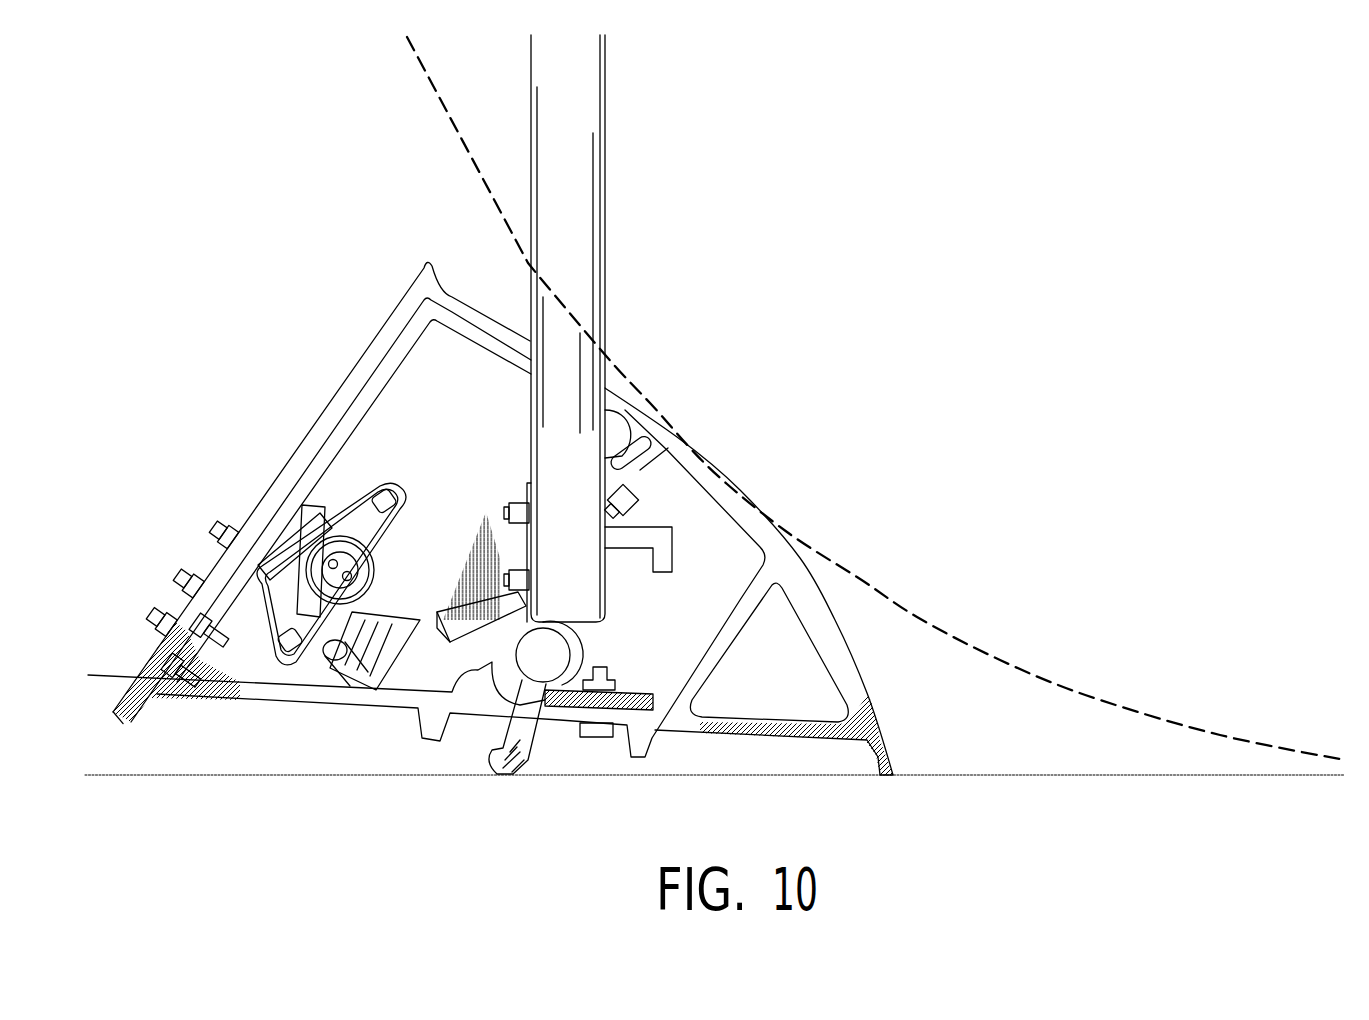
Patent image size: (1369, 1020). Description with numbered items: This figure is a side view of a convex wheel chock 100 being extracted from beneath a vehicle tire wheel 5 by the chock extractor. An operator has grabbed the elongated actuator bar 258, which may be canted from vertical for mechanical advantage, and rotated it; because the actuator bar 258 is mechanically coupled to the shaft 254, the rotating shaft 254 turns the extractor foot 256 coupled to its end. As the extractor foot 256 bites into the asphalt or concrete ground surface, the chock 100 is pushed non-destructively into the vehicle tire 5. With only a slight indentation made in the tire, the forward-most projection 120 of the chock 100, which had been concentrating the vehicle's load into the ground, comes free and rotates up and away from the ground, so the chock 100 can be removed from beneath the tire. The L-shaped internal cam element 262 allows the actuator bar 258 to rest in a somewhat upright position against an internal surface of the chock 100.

The vehicle tire wheel 5 is at (437, 110).
The actuator bar 258 is at (556, 217).
The convex wheel chock 100 is at (366, 345).
The projection 120 is at (128, 682).
The shaft 254 is at (574, 651).
The extractor foot 256 is at (500, 755).
The L-shaped internal cam element 262 is at (673, 553).